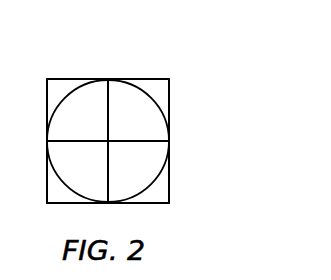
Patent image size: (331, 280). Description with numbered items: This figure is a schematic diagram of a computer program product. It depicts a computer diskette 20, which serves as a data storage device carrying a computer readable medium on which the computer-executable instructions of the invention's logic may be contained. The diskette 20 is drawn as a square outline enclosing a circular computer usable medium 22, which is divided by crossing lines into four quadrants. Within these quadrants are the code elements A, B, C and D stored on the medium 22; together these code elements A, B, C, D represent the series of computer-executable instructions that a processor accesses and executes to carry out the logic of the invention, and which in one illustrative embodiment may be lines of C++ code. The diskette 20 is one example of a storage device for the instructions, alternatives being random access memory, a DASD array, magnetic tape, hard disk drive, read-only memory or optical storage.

The computer diskette 20 is at (170, 96).
The computer usable medium 22 is at (88, 93).
The code element A is at (77, 110).
The code element B is at (138, 110).
The code element C is at (138, 172).
The code element D is at (77, 172).